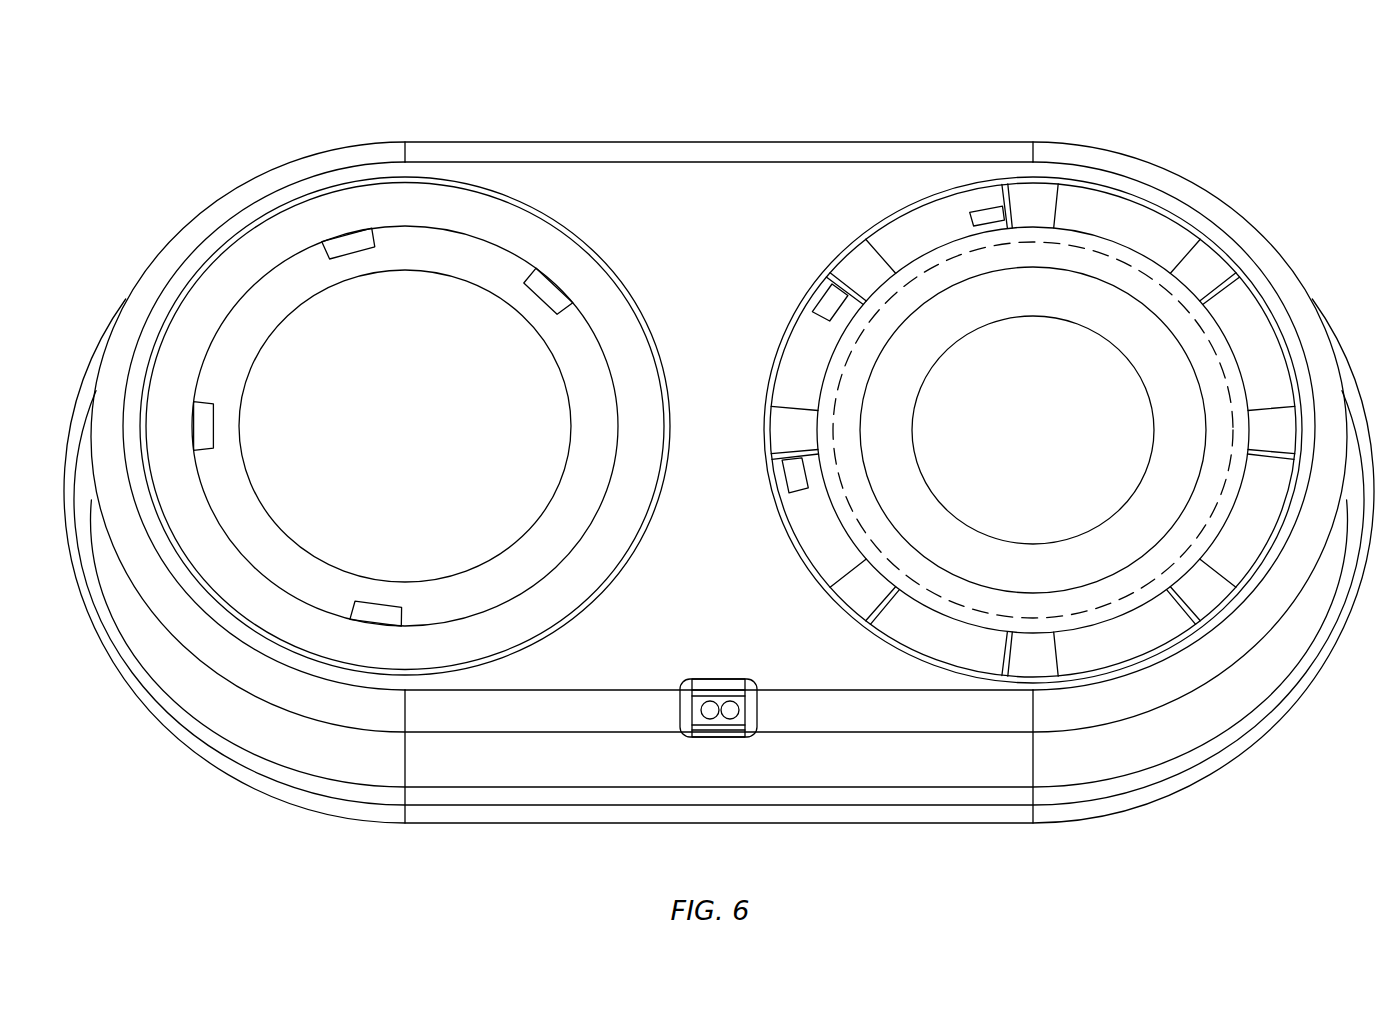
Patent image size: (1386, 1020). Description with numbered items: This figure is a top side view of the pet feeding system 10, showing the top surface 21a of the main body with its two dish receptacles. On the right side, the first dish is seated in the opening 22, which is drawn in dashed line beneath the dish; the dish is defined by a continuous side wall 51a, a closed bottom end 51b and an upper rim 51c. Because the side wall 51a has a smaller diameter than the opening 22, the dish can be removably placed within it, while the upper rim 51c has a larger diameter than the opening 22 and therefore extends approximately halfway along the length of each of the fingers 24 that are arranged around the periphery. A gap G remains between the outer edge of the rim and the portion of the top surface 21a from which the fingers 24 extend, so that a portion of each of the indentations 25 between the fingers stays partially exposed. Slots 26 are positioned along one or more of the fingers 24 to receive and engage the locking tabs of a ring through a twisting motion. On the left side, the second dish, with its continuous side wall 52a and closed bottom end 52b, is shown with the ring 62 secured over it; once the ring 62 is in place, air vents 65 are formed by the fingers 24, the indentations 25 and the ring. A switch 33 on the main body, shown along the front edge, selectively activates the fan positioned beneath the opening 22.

The system 10 is at (372, 104).
The top surface 21a is at (698, 268).
The ring 62 is at (262, 258).
The air vents 65 is at (350, 238).
The continuous side wall 52a is at (258, 320).
The closed bottom end 52b is at (381, 440).
The continuous side wall 51a is at (1009, 305).
The closed bottom end 51b is at (1009, 440).
The upper rim 51c is at (1078, 240).
The fingers 24 is at (1037, 186).
The indentations 25 is at (928, 228).
The slots 26 is at (997, 207).
The opening 22 is at (935, 603).
The switch 33 is at (718, 700).
The gap G is at (863, 495).